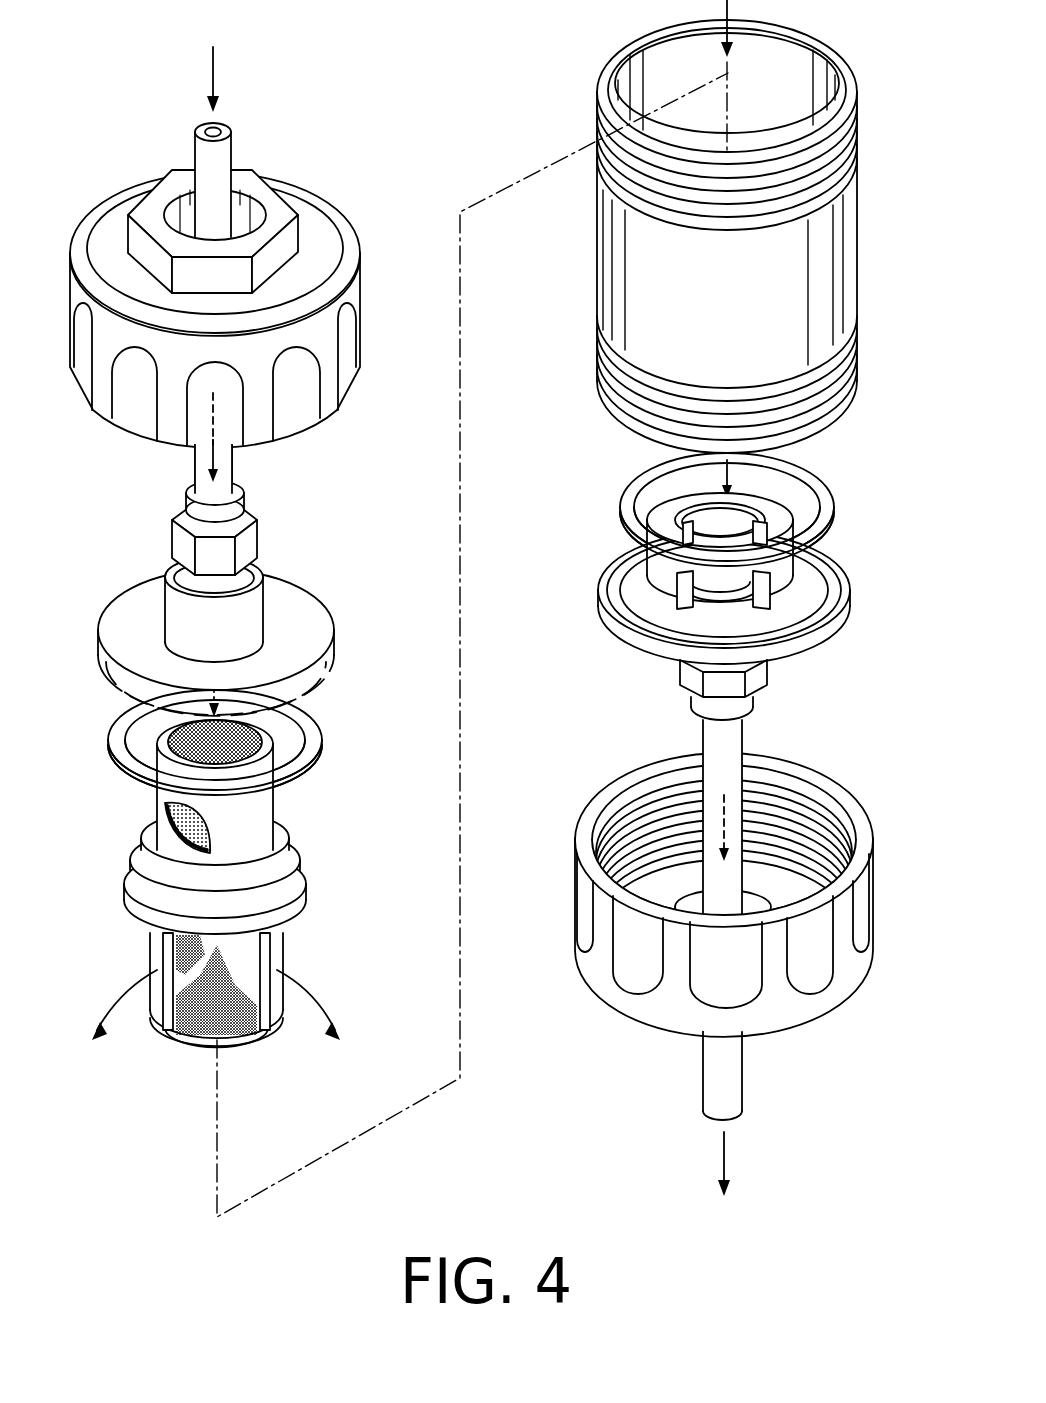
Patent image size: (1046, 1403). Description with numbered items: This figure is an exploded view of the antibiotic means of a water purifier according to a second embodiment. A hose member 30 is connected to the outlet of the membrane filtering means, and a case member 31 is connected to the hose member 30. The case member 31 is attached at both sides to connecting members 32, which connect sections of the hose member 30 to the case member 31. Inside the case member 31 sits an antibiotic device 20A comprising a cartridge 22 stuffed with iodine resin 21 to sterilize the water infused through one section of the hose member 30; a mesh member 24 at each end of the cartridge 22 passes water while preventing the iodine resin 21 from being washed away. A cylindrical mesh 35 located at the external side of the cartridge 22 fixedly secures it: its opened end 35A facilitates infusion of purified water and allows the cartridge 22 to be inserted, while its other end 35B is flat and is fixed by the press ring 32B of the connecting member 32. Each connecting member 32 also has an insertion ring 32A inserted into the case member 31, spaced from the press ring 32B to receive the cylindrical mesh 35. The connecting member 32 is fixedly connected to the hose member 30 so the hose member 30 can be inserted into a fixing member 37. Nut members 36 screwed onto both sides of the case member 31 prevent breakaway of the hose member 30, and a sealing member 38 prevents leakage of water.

The antibiotic device 20A is at (110, 575).
The iodine resin 21 is at (170, 827).
The cartridge 22 is at (257, 812).
The mesh member 24 is at (163, 740).
The hose member 30 is at (223, 150).
The case member 31 is at (818, 259).
The connecting member 32 is at (317, 625).
The insertion ring 32A is at (643, 563).
The press ring 32B is at (680, 587).
The cylindrical mesh 35 is at (192, 1038).
The opened end 35A is at (167, 877).
The other end 35B is at (242, 1038).
The nut member 36 is at (343, 268).
The fixing member 37 is at (250, 538).
The sealing member 38 is at (125, 762).